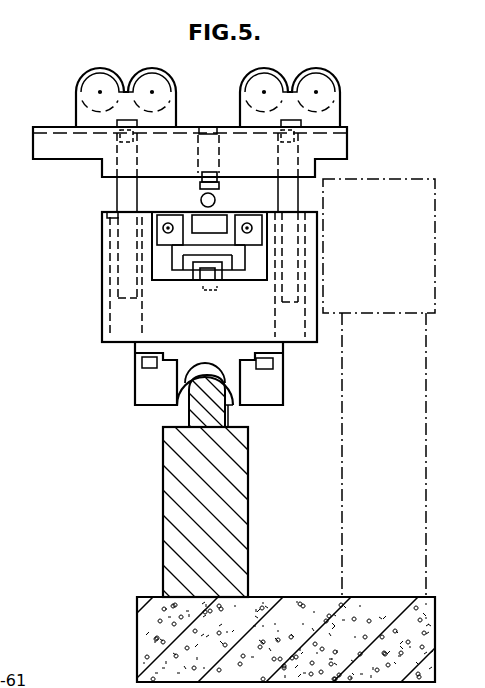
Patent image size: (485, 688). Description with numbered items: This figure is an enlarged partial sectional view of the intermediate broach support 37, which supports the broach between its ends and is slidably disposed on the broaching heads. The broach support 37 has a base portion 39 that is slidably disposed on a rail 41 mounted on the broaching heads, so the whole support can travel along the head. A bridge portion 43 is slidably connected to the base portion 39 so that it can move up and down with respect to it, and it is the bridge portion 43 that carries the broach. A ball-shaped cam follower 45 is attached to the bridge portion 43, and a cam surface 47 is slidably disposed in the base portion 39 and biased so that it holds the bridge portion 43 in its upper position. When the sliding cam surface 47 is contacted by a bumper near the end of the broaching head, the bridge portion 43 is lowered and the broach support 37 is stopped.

The broach support 37 is at (344, 149).
The base portion 39 is at (102, 277).
The rail 41 is at (187, 403).
The bridge portion 43 is at (93, 149).
The ball-shaped cam follower 45 is at (221, 201).
The cam surface 47 is at (201, 220).